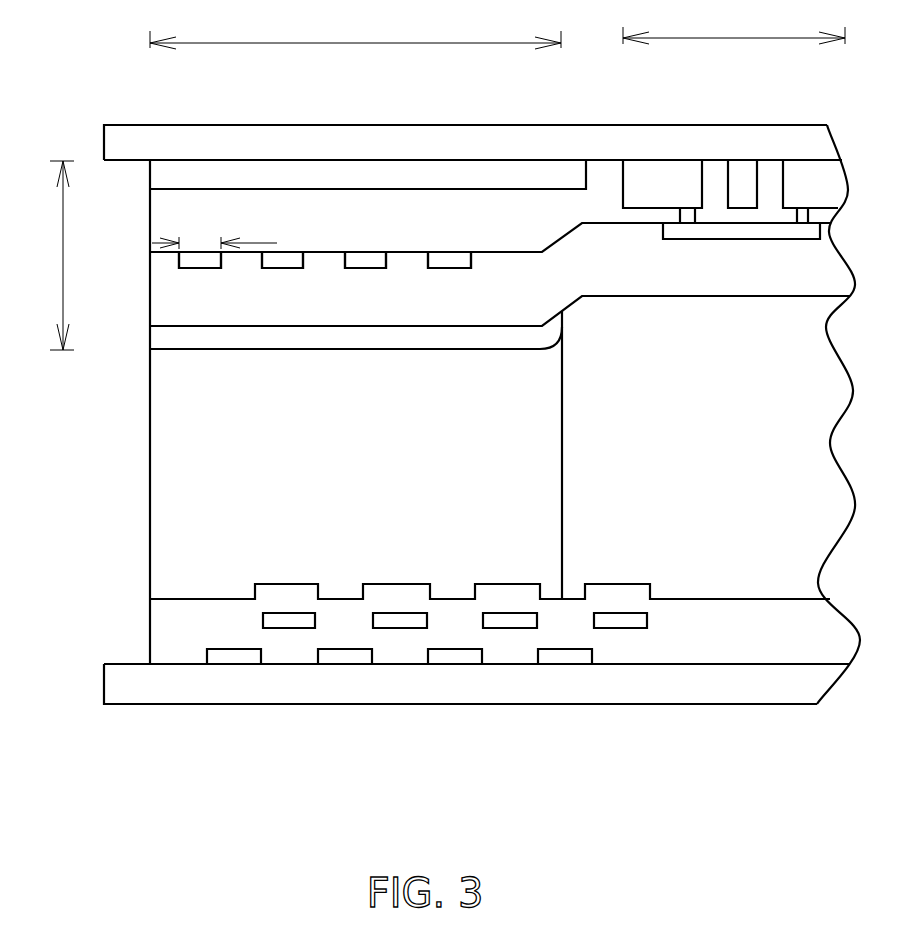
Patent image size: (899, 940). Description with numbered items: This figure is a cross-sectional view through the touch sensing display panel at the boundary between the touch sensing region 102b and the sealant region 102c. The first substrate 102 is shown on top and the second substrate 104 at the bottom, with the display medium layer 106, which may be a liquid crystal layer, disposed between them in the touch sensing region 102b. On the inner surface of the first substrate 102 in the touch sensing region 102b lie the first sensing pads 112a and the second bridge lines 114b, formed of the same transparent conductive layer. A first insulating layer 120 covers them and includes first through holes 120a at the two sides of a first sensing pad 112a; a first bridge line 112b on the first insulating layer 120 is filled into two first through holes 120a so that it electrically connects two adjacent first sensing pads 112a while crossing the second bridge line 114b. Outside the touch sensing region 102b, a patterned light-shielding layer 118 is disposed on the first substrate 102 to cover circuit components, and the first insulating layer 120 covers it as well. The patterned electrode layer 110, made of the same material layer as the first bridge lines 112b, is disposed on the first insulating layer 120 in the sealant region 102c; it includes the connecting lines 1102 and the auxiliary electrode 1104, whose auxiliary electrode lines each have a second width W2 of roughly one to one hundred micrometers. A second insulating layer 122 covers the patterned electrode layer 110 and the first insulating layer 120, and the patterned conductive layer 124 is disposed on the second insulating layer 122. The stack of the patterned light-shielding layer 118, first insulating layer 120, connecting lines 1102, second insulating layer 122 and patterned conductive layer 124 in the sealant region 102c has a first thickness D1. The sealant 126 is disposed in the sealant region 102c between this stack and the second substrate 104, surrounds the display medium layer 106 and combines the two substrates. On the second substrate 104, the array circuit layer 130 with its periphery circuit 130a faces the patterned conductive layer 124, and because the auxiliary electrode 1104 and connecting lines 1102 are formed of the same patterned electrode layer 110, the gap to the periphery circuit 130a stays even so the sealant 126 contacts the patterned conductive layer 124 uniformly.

The first substrate 102 is at (443, 140).
The touch sensing region 102b is at (734, 27).
The sealant region 102c is at (355, 31).
The second substrate 104 is at (325, 697).
The display medium layer 106 is at (693, 478).
The patterned electrode layer 110 is at (177, 262).
The connecting lines 1102 is at (456, 262).
The auxiliary electrode 1104 is at (293, 262).
The first sensing pads 112a is at (807, 183).
The first bridge lines 112b is at (702, 226).
The second bridge lines 114b is at (745, 183).
The patterned light-shielding layer 118 is at (157, 172).
The first insulating layer 120 is at (322, 240).
The first through holes 120a is at (783, 214).
The second insulating layer 122 is at (548, 298).
The patterned conductive layer 124 is at (185, 337).
The sealant 126 is at (163, 530).
The array circuit layer 130 is at (100, 599).
The periphery circuit 130a is at (262, 620).
The second width W2 is at (214, 233).
The first thickness D1 is at (50, 255).